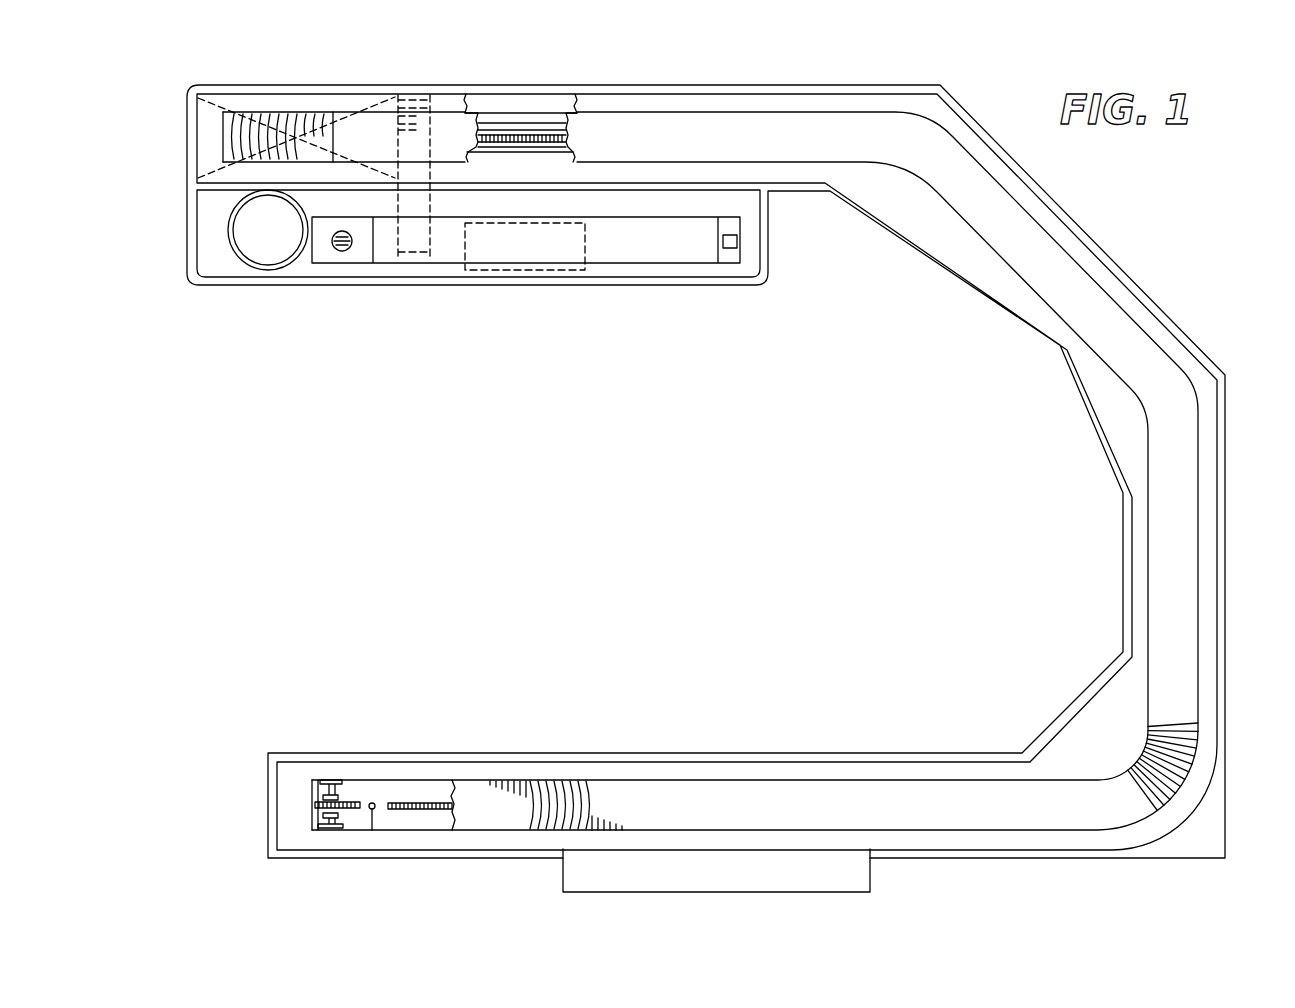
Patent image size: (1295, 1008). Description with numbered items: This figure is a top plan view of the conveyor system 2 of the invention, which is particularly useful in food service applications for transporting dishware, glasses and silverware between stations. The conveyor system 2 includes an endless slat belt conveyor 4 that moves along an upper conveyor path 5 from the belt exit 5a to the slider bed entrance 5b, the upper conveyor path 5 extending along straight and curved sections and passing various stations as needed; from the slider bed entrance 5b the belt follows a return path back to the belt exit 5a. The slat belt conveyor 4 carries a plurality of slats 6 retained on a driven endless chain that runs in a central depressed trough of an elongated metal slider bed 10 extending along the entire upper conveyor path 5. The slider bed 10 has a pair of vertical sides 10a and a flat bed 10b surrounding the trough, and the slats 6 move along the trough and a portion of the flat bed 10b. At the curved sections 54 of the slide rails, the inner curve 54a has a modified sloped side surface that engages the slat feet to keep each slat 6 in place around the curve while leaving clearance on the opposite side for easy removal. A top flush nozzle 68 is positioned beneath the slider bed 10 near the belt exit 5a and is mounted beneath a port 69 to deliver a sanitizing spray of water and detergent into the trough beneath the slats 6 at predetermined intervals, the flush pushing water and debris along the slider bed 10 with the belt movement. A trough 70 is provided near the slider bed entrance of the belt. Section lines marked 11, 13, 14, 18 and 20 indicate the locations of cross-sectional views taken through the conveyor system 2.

The conveyor system 2 is at (888, 243).
The endless slat belt conveyor 4 is at (1025, 225).
The upper conveyor path 5 is at (1135, 358).
The belt exit 5a is at (362, 787).
The slider bed entrance 5b is at (232, 138).
The slats 6 is at (552, 780).
The slider bed 10 is at (967, 768).
The vertical sides 10a is at (835, 758).
The flat bed 10b is at (645, 773).
The section line 11 is at (249, 815).
The section line 13 is at (323, 43).
The section line 14 is at (410, 43).
The section line 18 is at (168, 152).
The section line 20 / base block 20 is at (752, 720).
The curved sections 54 is at (1172, 415).
The inner curve 54a is at (910, 172).
The top flush nozzle 68 is at (374, 800).
The port 69 is at (385, 800).
The trough 70 is at (530, 135).